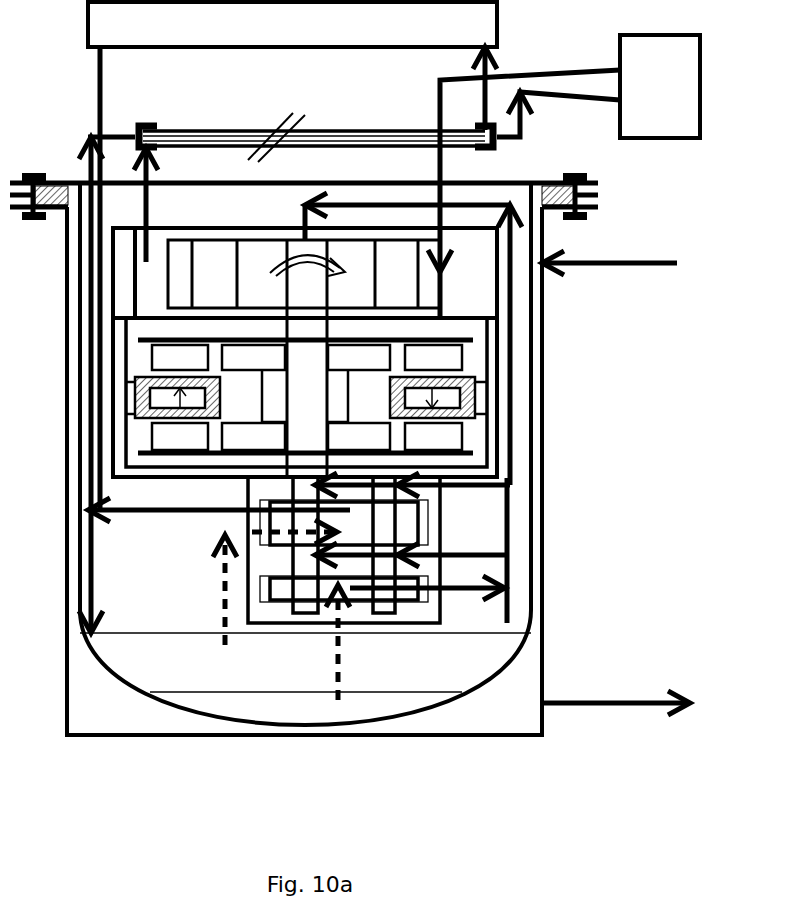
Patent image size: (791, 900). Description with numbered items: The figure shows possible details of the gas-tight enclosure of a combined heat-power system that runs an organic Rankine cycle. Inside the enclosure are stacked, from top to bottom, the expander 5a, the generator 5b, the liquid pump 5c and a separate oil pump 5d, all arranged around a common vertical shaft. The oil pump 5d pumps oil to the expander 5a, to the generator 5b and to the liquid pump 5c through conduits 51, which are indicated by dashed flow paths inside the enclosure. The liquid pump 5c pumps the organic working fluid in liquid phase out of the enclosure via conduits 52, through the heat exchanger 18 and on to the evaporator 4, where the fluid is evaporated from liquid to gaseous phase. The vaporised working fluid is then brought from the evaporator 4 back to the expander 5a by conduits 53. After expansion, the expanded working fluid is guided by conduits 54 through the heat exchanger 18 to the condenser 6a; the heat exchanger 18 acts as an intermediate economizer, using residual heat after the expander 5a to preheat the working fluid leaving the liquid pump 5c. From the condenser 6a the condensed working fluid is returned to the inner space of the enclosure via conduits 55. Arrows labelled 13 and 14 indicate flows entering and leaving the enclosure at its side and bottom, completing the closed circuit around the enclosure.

The condenser 6a is at (292, 24).
The evaporator 4 is at (660, 86).
The conduits 55 is at (97, 90).
The conduits 54 is at (475, 70).
The conduits 53 is at (437, 115).
The conduits 52 is at (522, 125).
The heat exchanger 18 is at (316, 133).
The inlet 13 is at (609, 252).
The outlet 14 is at (616, 692).
The expander 5a is at (317, 339).
The generator 5b is at (462, 353).
The liquid pump 5c is at (379, 548).
The oil pump 5d is at (383, 583).
The conduits 51 is at (510, 520).